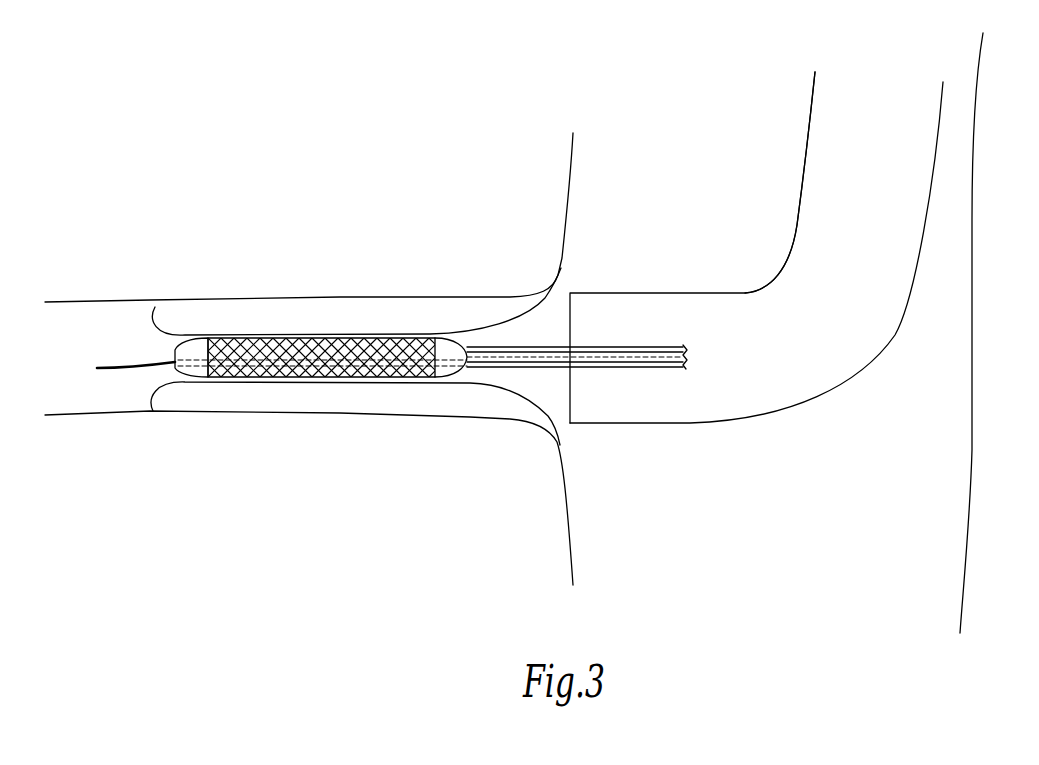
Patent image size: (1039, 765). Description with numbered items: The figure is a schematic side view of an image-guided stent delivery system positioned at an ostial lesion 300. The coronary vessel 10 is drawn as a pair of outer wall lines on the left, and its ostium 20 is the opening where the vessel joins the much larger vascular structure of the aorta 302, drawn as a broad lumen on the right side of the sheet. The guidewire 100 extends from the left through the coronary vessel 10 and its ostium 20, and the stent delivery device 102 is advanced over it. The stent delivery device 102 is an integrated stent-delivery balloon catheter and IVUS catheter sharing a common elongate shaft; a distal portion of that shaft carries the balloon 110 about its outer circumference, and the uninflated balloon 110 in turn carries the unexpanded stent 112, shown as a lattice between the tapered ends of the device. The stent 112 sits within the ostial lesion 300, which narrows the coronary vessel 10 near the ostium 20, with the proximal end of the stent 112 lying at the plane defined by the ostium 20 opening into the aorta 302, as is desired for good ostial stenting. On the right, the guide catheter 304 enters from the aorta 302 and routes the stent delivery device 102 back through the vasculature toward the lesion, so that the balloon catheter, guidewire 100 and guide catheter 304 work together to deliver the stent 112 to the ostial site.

The coronary vessel 10 is at (82, 300).
The ostium 20 is at (563, 293).
The guidewire 100 is at (124, 363).
The stent delivery device 102 is at (643, 350).
The balloon 110 is at (190, 337).
The stent 112 is at (427, 338).
The ostial lesion 300 is at (345, 305).
The aorta 302 is at (977, 350).
The guide catheter 304 is at (805, 172).